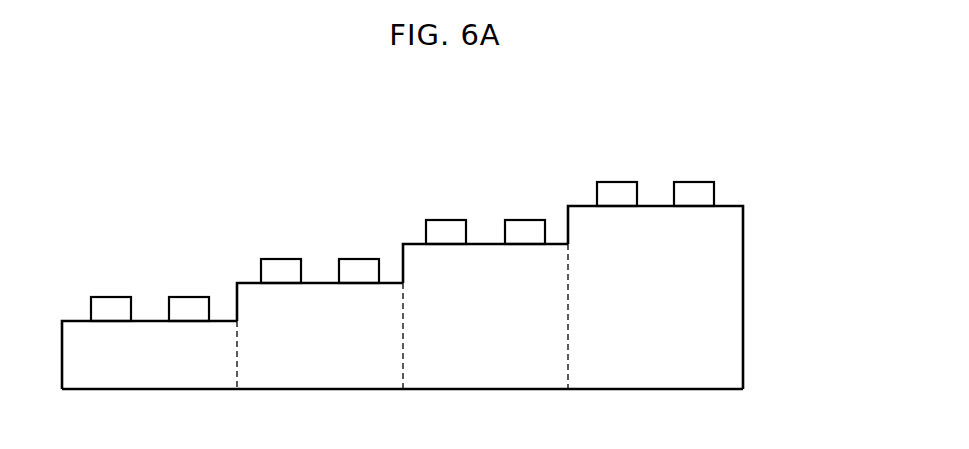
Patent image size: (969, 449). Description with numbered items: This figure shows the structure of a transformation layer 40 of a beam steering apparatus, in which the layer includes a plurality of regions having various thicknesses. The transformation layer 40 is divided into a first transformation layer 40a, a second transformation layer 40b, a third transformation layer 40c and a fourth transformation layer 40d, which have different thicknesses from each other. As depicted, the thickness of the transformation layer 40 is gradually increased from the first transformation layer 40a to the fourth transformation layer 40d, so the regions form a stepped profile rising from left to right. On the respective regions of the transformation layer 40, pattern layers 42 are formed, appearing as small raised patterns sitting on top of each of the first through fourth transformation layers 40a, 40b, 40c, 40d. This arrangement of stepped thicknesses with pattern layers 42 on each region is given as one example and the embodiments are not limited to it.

The transformation layer 40 is at (451, 307).
The first transformation layer 40a is at (149, 342).
The second transformation layer 40b is at (320, 380).
The third transformation layer 40c is at (486, 380).
The fourth transformation layer 40d is at (656, 380).
The pattern layer 42 is at (111, 302).